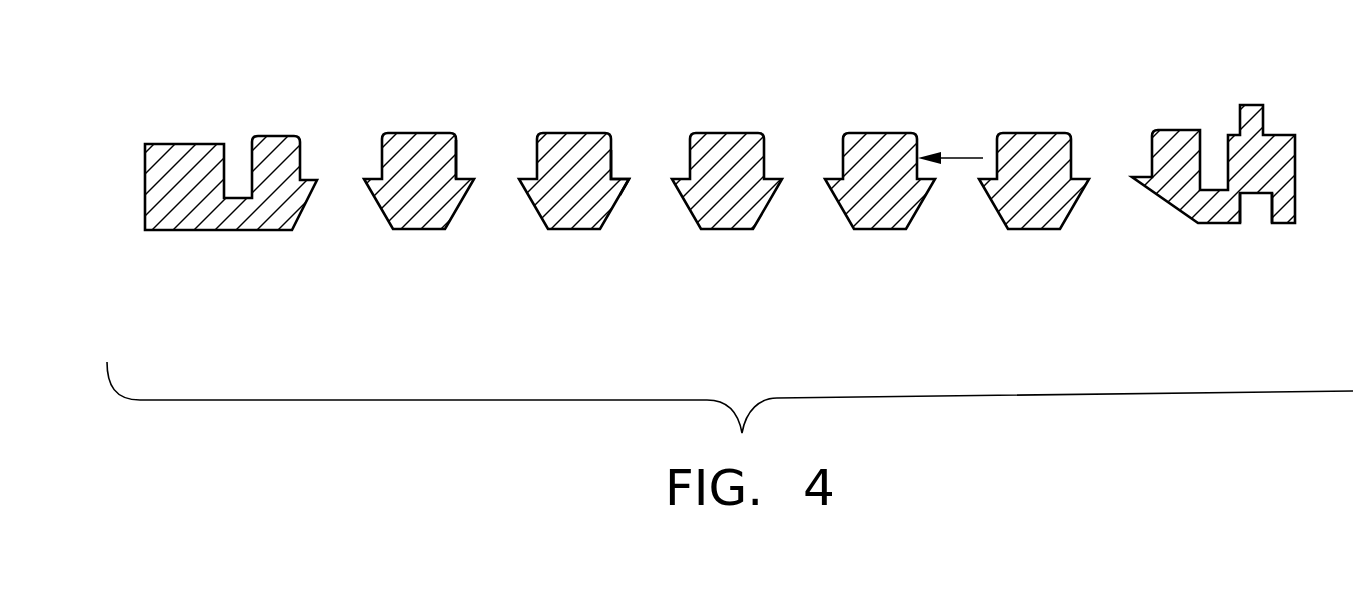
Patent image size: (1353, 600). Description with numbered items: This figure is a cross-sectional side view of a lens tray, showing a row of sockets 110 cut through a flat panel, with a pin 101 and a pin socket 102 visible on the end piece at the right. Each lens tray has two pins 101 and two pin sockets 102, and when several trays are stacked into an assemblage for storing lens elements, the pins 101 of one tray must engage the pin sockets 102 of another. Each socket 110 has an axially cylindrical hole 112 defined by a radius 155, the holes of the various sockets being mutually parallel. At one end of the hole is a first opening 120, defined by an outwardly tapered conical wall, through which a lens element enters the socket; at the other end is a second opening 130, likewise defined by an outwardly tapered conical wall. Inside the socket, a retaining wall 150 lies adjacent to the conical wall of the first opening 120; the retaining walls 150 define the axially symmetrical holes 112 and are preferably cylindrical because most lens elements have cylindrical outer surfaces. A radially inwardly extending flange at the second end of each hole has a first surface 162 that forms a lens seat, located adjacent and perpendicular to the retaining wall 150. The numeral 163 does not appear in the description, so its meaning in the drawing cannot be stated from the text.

The socket 110 is at (346, 132).
The second opening 130 is at (365, 225).
The retaining wall 150 is at (458, 151).
The first opening 120 is at (538, 133).
The first surface 162 is at (613, 178).
The fourth tile/block 163 is at (696, 165).
The axially cylindrical hole 112 is at (793, 147).
The radius 155 is at (950, 158).
The pin 101 is at (1252, 103).
The pin socket 102 is at (1257, 220).